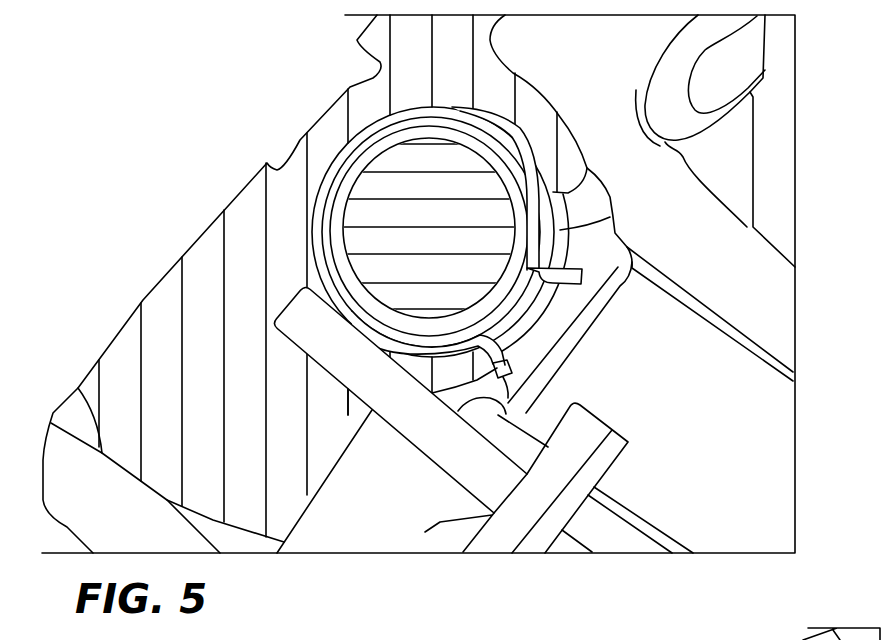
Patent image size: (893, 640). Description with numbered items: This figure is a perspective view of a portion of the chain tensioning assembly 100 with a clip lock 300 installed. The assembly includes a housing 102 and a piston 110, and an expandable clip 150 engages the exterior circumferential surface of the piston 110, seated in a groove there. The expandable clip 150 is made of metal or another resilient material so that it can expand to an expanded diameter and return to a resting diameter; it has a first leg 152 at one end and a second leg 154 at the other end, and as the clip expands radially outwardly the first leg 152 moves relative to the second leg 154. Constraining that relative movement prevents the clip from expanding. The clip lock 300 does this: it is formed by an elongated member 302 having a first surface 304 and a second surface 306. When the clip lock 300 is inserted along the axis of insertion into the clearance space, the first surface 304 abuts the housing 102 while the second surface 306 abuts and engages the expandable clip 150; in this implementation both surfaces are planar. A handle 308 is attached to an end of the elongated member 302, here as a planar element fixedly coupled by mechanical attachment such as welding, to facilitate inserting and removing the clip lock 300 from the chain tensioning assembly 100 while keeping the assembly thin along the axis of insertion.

The chain tensioning assembly 100 is at (160, 279).
The housing 102 is at (248, 500).
The piston 110 is at (447, 182).
The expandable clip 150 is at (320, 230).
The first leg 152 is at (510, 363).
The second leg 154 is at (567, 268).
The clip lock 300 is at (407, 442).
The elongated member 302 is at (473, 467).
The first surface 304 is at (368, 410).
The second surface 306 is at (503, 455).
The handle 308 is at (487, 543).